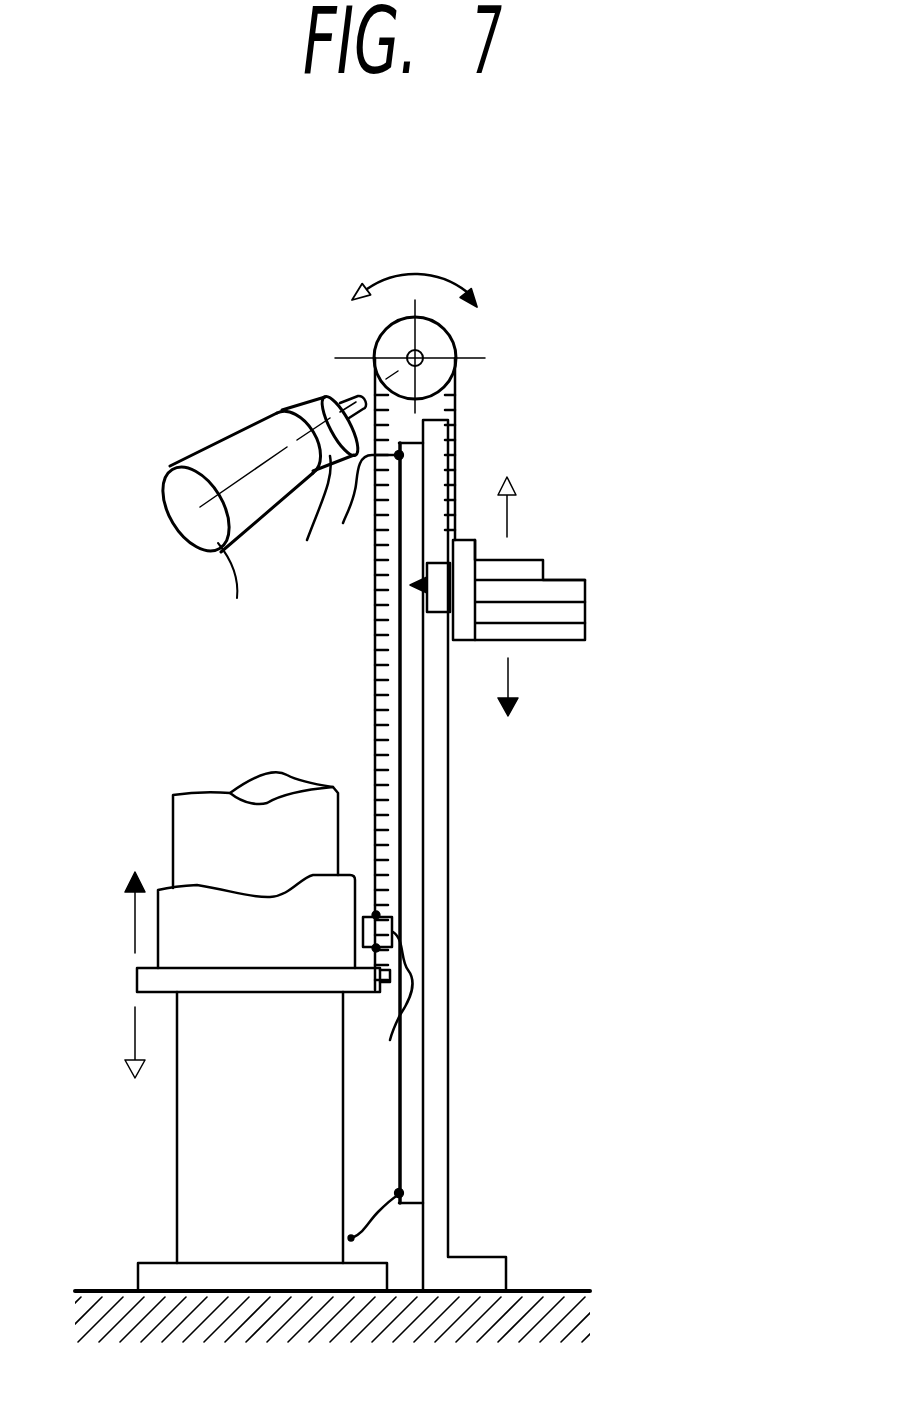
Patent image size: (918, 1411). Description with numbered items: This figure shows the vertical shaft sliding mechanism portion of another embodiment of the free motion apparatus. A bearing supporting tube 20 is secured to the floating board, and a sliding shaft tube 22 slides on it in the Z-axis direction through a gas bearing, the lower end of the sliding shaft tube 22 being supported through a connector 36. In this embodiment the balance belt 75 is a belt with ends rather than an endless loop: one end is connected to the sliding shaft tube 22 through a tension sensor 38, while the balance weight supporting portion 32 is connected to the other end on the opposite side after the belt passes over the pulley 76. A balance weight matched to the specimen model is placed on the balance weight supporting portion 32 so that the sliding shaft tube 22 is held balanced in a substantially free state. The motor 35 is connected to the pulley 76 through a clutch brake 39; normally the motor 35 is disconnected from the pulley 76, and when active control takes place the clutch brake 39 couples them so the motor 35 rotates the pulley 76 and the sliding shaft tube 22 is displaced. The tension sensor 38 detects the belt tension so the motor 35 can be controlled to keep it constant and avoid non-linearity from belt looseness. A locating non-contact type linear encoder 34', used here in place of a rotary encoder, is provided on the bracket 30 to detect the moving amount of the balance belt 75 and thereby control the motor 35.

The bearing supporting tube 20 is at (217, 1139).
The sliding shaft tube 22 is at (200, 915).
The bracket 30 is at (443, 1107).
The balance weight supporting portion 32 is at (557, 637).
The locating non-contact type linear encoder 34' is at (505, 842).
The motor 35 is at (198, 537).
The connector 36 is at (360, 977).
The tension sensor 38 is at (387, 930).
The clutch brake 39 is at (312, 403).
The balance belt 75 is at (373, 668).
The pulley 76 is at (440, 345).